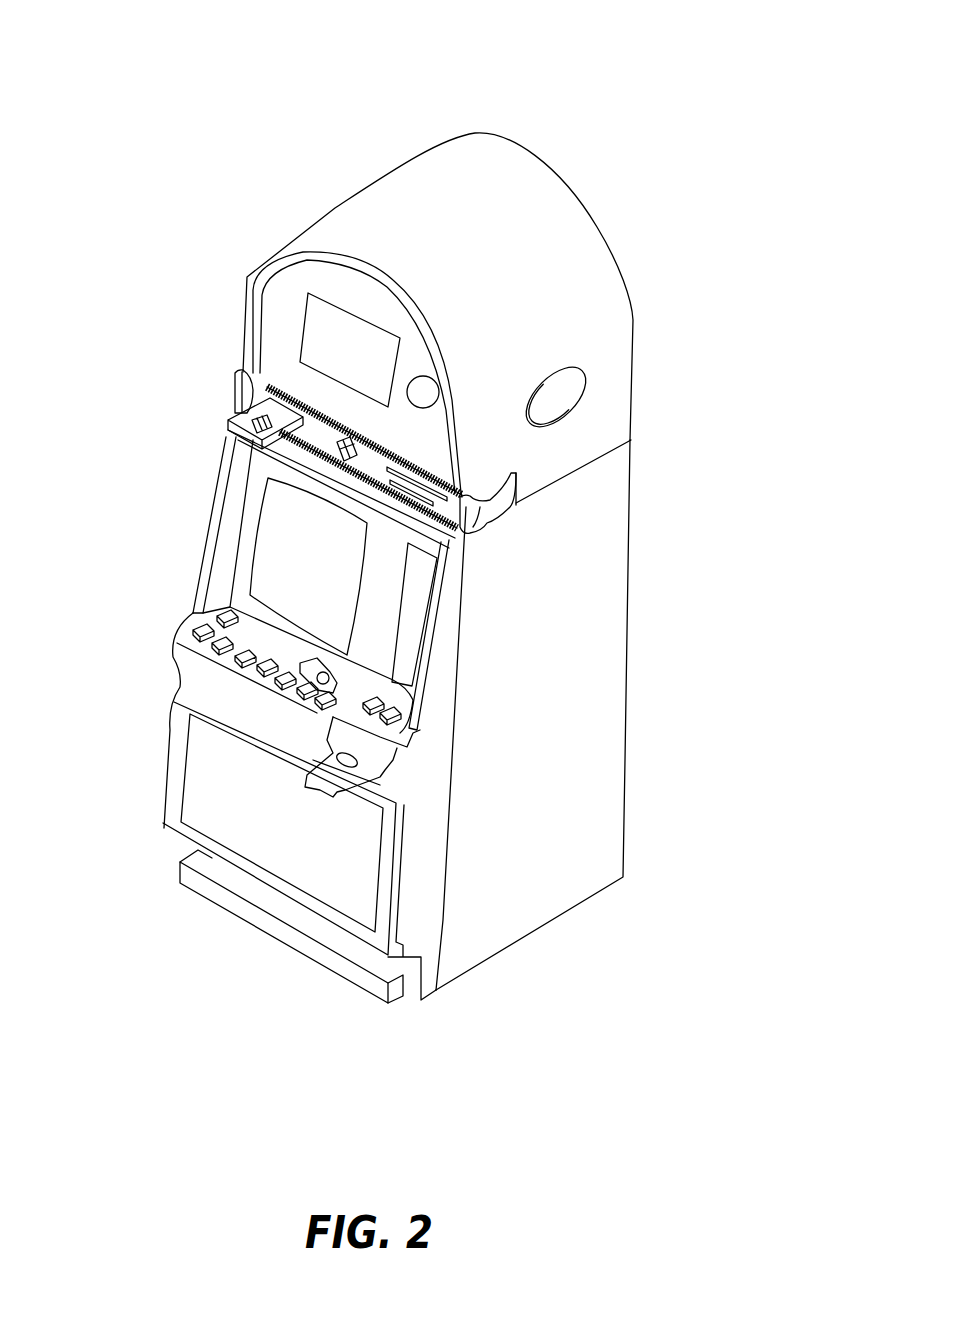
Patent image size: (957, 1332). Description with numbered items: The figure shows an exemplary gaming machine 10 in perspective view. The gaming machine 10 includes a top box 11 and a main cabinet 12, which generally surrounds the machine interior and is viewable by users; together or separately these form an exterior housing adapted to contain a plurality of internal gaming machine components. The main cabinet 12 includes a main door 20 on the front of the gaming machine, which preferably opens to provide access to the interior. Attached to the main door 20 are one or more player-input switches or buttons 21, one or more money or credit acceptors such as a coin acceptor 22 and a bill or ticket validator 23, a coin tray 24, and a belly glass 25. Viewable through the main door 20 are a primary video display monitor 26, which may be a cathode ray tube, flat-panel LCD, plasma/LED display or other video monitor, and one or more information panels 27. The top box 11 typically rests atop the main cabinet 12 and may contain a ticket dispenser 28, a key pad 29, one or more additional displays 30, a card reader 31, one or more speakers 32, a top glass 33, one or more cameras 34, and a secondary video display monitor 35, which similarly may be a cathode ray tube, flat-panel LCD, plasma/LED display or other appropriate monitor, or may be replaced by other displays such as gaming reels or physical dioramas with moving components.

The gaming machine 10 is at (108, 92).
The top box 11 is at (528, 292).
The main cabinet 12 is at (557, 725).
The main door 20 is at (405, 787).
The player-input switches or buttons 21 is at (253, 672).
The coin acceptor 22 is at (307, 677).
The bill or ticket validator 23 is at (413, 897).
The coin tray 24 is at (402, 990).
The belly glass 25 is at (213, 797).
The primary video display monitor 26 is at (265, 569).
The information panels 27 is at (416, 592).
The ticket dispenser 28 is at (272, 404).
The key pad 29 is at (333, 440).
The additional displays 30 is at (460, 437).
The card reader 31 is at (517, 473).
The speakers 32 is at (240, 390).
The top glass 33 is at (278, 353).
The cameras 34 is at (427, 392).
The secondary video display monitor 35 is at (353, 340).